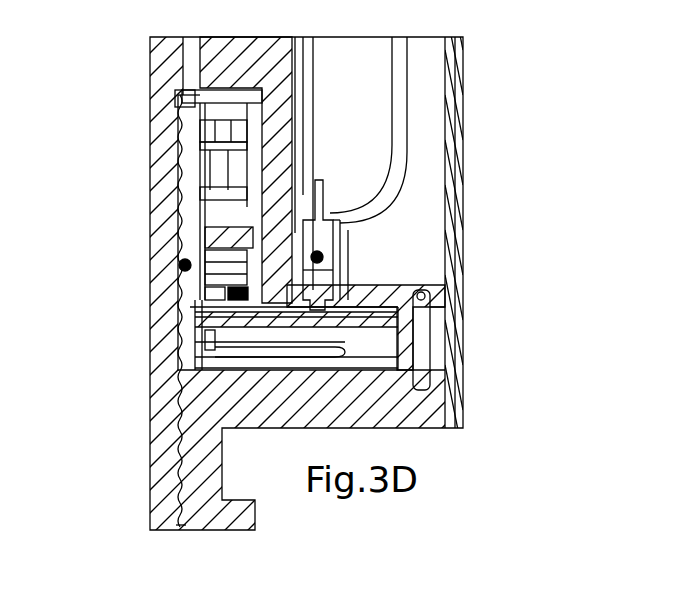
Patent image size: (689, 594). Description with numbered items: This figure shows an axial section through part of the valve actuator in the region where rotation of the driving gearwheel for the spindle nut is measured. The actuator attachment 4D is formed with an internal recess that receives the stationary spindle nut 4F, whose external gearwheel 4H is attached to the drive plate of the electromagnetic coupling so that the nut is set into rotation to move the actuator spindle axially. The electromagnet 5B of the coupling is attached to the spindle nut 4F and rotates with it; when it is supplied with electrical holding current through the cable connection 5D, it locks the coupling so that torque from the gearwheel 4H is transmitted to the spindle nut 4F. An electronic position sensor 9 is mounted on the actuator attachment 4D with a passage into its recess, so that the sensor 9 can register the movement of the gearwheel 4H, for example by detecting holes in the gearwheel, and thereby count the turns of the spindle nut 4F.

The cable connection 5D is at (415, 72).
The electronic position sensor 9 is at (317, 257).
The actuator attachment 4D is at (385, 279).
The spindle nut 4F is at (175, 273).
The electromagnet 5B is at (232, 298).
The external gearwheel 4H is at (352, 326).